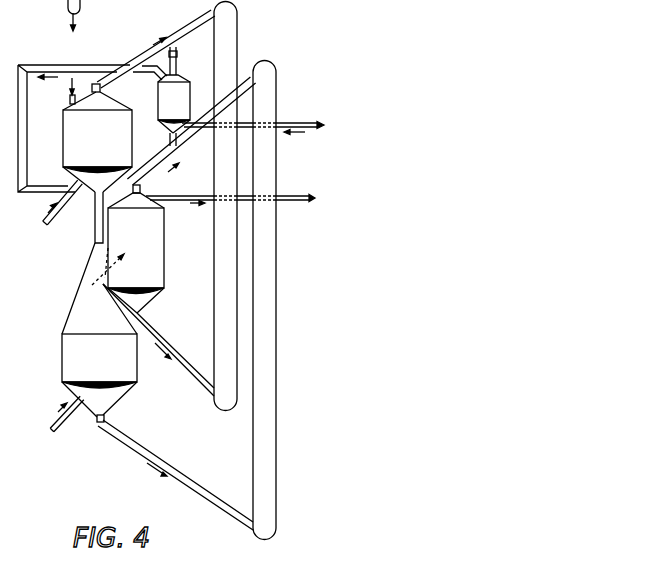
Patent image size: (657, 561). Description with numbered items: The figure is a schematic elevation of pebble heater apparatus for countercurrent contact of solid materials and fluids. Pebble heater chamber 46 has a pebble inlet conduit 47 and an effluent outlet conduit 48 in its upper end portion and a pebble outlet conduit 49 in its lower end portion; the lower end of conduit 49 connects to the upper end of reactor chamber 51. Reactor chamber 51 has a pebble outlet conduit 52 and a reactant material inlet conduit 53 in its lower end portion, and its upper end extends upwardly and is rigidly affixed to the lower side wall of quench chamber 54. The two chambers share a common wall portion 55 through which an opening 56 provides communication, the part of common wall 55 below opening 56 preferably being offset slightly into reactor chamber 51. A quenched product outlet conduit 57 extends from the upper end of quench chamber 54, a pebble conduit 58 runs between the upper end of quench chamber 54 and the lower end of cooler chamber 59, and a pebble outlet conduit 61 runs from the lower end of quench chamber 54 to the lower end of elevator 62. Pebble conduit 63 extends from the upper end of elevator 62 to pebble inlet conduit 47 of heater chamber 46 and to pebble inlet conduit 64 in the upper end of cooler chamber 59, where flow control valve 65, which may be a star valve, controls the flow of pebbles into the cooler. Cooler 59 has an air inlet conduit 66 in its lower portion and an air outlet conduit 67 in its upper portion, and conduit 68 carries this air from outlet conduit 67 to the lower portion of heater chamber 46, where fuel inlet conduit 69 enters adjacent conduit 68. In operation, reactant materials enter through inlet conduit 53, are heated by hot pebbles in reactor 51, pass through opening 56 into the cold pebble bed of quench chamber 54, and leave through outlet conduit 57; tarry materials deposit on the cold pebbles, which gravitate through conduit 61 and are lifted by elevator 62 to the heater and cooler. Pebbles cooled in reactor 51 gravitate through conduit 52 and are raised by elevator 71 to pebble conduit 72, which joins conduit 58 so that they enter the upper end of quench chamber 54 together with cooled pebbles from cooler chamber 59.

The pebble heater chamber 46 is at (63, 134).
The pebble inlet conduit 47 is at (92, 88).
The effluent outlet conduit 48 is at (70, 100).
The pebble outlet conduit 49 is at (95, 215).
The reactor chamber 51 is at (72, 315).
The pebble outlet conduit 52 is at (134, 443).
The reactant material inlet conduit 53 is at (63, 424).
The quench chamber 54 is at (164, 244).
The common wall portion 55 is at (104, 284).
The opening 56 is at (108, 249).
The quenched product outlet conduit 57 is at (165, 200).
The pebble conduit 58 is at (165, 157).
The cooler chamber 59 is at (188, 96).
The pebble outlet conduit 61 is at (157, 329).
The elevator 62 is at (214, 263).
The pebble conduit 63 is at (203, 24).
The pebble inlet conduit 64 is at (177, 67).
The flow control valve 65 is at (178, 54).
The air inlet conduit 66 is at (288, 124).
The air outlet conduit 67 is at (158, 77).
The conduit 68 is at (67, 65).
The fuel inlet conduit 69 is at (49, 225).
The elevator 71 is at (276, 338).
The pebble conduit 72 is at (204, 124).